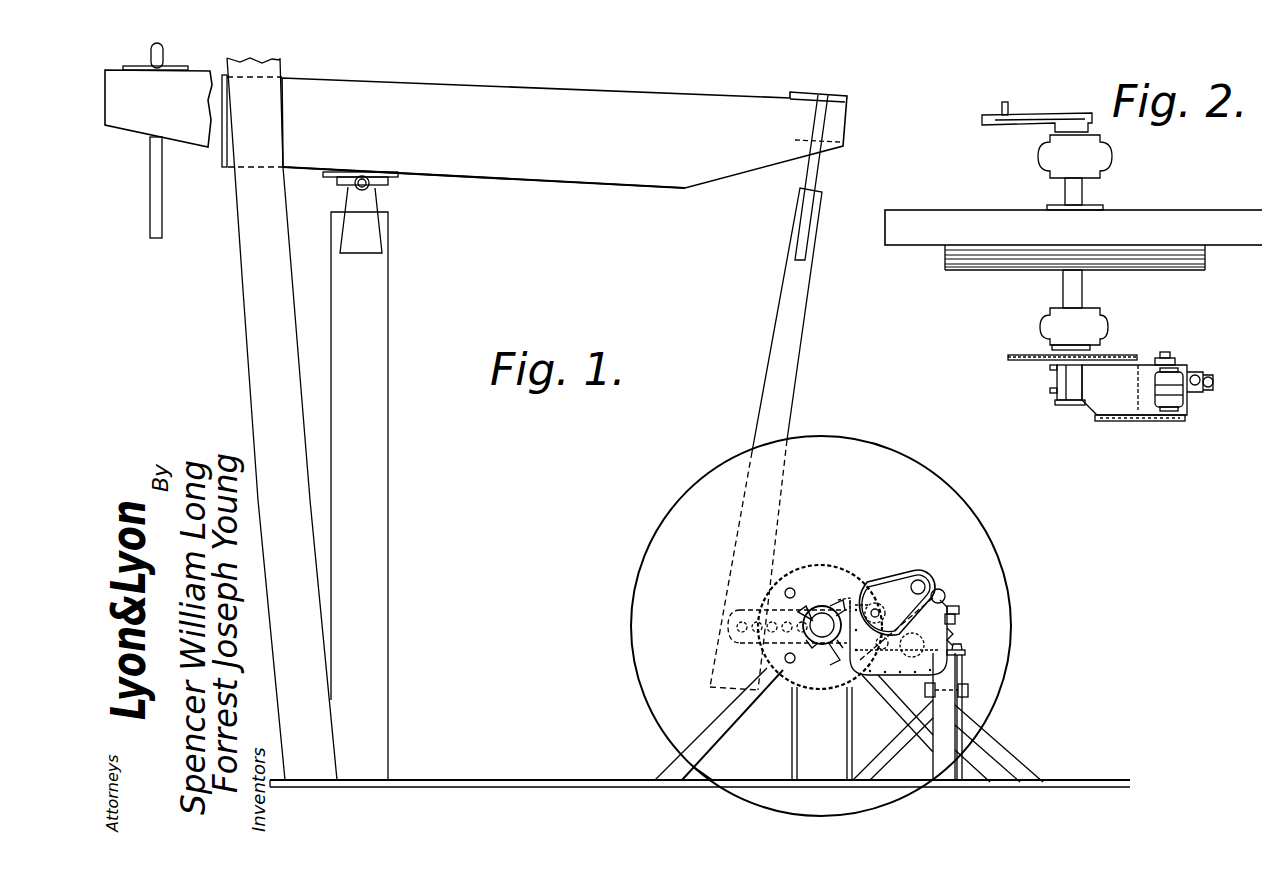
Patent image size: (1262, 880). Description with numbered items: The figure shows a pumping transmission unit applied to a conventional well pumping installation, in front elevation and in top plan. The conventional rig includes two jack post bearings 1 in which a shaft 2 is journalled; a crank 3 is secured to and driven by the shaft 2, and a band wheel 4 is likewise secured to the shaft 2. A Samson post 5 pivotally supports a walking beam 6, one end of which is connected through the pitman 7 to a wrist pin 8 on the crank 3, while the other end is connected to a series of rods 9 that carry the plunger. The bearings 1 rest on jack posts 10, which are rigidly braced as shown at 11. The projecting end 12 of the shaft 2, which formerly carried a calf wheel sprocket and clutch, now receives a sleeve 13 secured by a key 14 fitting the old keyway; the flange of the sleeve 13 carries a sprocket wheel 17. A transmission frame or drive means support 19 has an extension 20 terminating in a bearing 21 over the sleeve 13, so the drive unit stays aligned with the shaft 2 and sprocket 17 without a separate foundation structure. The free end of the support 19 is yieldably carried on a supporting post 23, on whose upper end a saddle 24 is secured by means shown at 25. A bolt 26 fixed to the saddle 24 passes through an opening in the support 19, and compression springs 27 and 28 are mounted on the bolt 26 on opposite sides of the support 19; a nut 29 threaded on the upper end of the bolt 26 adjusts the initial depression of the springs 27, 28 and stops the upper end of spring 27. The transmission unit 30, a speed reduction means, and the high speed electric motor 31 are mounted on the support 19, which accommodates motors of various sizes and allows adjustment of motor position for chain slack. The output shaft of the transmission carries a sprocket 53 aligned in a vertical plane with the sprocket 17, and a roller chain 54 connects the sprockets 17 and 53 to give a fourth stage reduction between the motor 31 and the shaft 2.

In FIG. 2, the jack post bearing 1 is at (1105, 152).
In FIG. 1, the shaft 2 is at (822, 625).
In FIG. 2, the shaft 2 is at (1083, 194).
In FIG. 1, the crank 3 is at (735, 612).
In FIG. 2, the crank 3 is at (1048, 113).
In FIG. 1, the band wheel 4 is at (955, 508).
In FIG. 2, the band wheel 4 is at (1179, 213).
In FIG. 1, the Samson post 5 is at (388, 535).
In FIG. 1, the walking beam 6 is at (592, 98).
In FIG. 1, the pitman 7 is at (795, 329).
In FIG. 1, the wrist pin 8 is at (730, 628).
In FIG. 2, the wrist pin 8 is at (1009, 104).
In FIG. 1, the rods 9 is at (150, 183).
In FIG. 1, the jack posts 10 is at (792, 738).
In FIG. 1, the bracing 11 is at (683, 765).
In FIG. 2, the projecting end of the shaft 12 is at (1067, 403).
In FIG. 1, the sleeve 13 is at (817, 645).
In FIG. 1, the key 14 is at (821, 604).
In FIG. 1, the sprocket wheel 17 is at (823, 572).
In FIG. 2, the sprocket wheel 17 is at (1070, 345).
In FIG. 1, the transmission frame or drive means support 19 is at (840, 606).
In FIG. 2, the transmission frame or drive means support 19 is at (1138, 364).
In FIG. 1, the extension 20 is at (840, 648).
In FIG. 2, the extension 20 is at (1102, 400).
In FIG. 2, the bearing 21 is at (1060, 380).
In FIG. 1, the supporting post 23 is at (947, 735).
In FIG. 1, the saddle 24 is at (965, 655).
In FIG. 2, the saddle 24 is at (1211, 377).
In FIG. 1, the securing means 25 is at (968, 673).
In FIG. 1, the bolt 26 is at (950, 608).
In FIG. 2, the bolt 26 is at (1195, 375).
In FIG. 1, the compression spring 27 is at (950, 625).
In FIG. 1, the compression spring 28 is at (950, 638).
In FIG. 1, the nut 29 is at (952, 616).
In FIG. 1, the transmission unit 30 is at (898, 688).
In FIG. 1, the electric motor 31 is at (925, 590).
In FIG. 2, the electric motor 31 is at (1180, 395).
In FIG. 2, the sprocket 53 is at (1170, 353).
In FIG. 1, the roller chain 54 is at (876, 583).